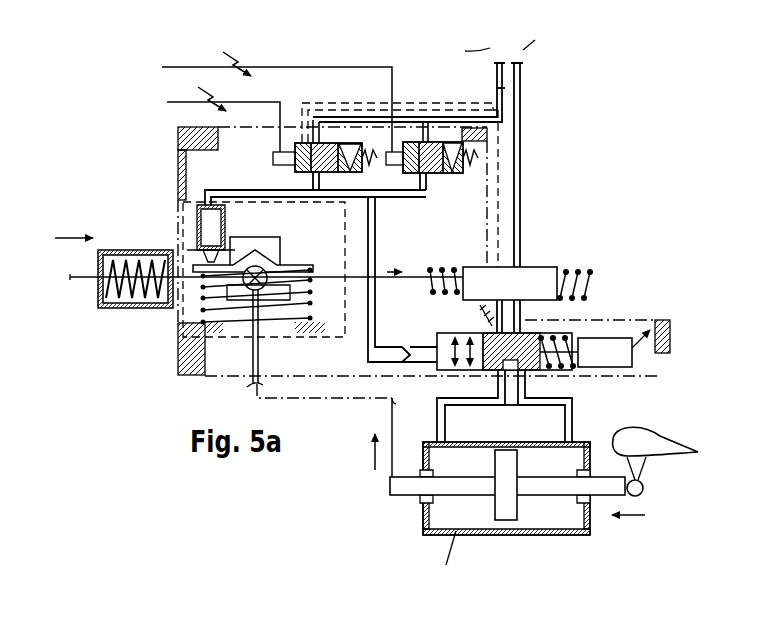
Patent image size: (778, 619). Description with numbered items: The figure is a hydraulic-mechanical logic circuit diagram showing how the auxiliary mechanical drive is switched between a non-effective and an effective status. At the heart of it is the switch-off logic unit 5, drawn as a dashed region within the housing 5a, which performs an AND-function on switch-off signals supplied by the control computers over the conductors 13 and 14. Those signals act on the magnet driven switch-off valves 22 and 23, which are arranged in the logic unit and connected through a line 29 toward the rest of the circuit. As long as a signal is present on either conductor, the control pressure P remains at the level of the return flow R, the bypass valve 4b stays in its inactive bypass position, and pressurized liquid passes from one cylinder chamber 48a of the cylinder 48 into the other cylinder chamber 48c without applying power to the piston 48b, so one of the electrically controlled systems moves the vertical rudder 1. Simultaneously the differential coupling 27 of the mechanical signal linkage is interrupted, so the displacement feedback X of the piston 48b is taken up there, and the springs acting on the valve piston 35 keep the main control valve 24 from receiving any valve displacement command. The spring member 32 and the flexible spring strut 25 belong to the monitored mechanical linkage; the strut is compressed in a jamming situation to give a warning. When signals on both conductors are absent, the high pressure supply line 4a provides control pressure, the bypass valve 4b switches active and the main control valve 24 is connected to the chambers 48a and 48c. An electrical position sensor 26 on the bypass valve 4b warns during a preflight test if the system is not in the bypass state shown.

The vertical rudder 1 is at (642, 446).
The high pressure supply line 4a is at (519, 85).
The bypass valve 4b is at (530, 333).
The switch-off logic unit 5 is at (328, 356).
The housing 5a is at (193, 342).
The conductor 13 is at (172, 101).
The conductor 14 is at (299, 67).
The switch-off valve 22 is at (346, 143).
The switch-off valve 23 is at (460, 174).
The main control valve 24 is at (545, 268).
The flexible spring strut 25 is at (124, 250).
The electrical position sensor 26 is at (633, 360).
The differential coupling 27 is at (276, 246).
The connecting line 29 is at (405, 196).
The differential signal transmitting linkage member 32 is at (268, 292).
The valve piston 35 is at (206, 203).
The cylinder 48 is at (482, 512).
The cylinder chamber 48a is at (430, 512).
The piston 48b is at (508, 516).
The cylinder chamber 48c is at (555, 515).